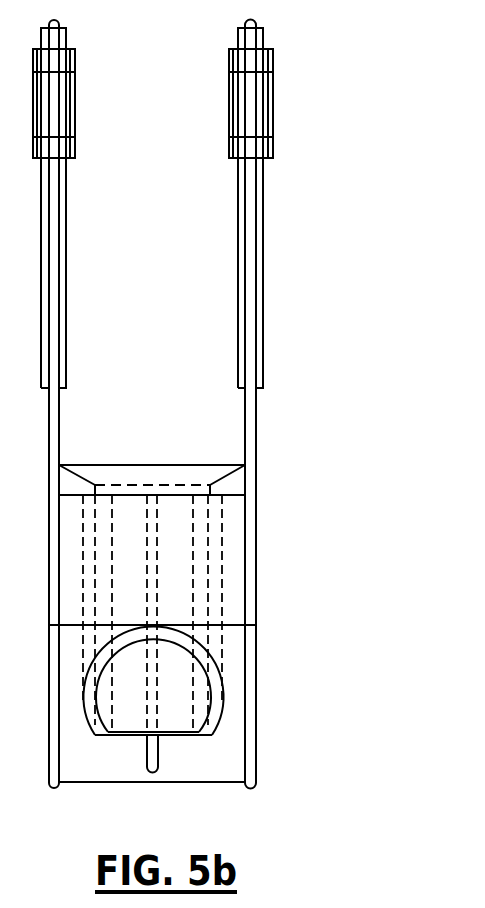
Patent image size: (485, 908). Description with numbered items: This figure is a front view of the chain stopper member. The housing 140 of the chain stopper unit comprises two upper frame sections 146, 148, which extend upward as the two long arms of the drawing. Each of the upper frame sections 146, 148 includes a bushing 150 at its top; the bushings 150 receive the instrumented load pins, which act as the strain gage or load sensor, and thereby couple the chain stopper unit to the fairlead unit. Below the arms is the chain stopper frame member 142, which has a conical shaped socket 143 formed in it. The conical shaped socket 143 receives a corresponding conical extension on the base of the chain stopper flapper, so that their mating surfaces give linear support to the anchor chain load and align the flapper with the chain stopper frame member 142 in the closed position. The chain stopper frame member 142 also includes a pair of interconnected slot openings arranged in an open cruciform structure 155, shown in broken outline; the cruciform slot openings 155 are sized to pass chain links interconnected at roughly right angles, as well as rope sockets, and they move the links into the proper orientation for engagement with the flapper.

The housing 140 is at (208, 404).
The chain stopper frame member 142 is at (237, 484).
The conical shaped socket 143 is at (163, 473).
The upper frame section 146 is at (73, 198).
The upper frame section 148 is at (263, 200).
The bushing 150 is at (75, 63).
The cruciform slot openings 155 is at (203, 588).